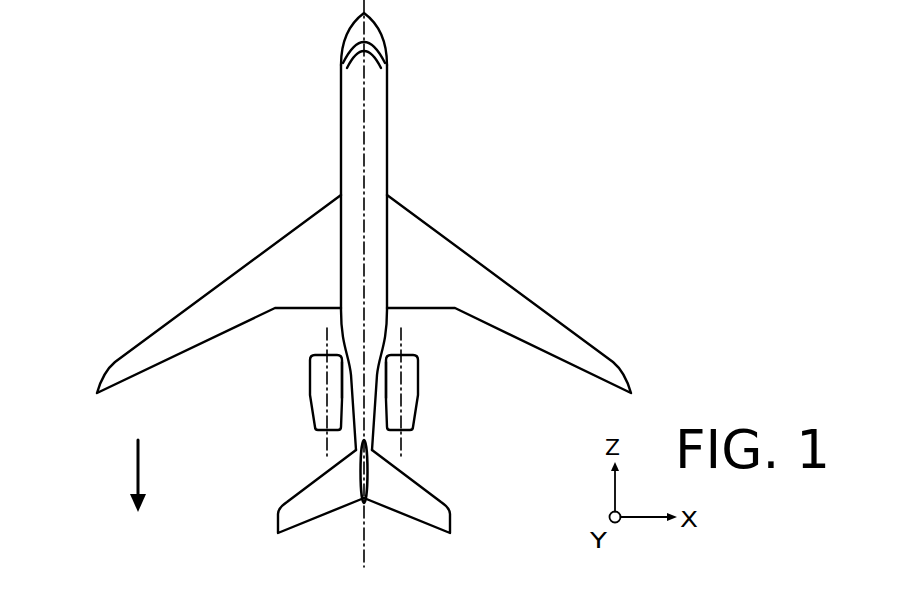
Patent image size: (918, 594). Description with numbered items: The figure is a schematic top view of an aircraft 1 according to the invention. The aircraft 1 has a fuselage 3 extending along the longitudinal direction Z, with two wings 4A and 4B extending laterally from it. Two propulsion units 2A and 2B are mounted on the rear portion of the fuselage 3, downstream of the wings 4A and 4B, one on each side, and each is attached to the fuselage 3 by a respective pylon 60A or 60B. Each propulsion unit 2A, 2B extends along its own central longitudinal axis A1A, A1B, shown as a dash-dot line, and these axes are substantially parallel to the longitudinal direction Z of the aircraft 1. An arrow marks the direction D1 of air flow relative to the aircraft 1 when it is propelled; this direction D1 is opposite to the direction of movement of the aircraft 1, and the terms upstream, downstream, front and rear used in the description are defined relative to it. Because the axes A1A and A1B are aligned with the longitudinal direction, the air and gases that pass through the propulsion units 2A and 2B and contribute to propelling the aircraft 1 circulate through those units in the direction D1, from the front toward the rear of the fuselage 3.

The aircraft 1 is at (492, 110).
The fuselage 3 is at (350, 103).
The wing 4A is at (230, 280).
The wing 4B is at (475, 273).
The propulsion unit 2A is at (320, 379).
The propulsion unit 2B is at (413, 395).
The pylon 60A is at (345, 375).
The pylon 60B is at (383, 373).
The central longitudinal axis A1A is at (327, 452).
The central longitudinal axis A1B is at (401, 452).
The direction of air flow D1 is at (138, 458).